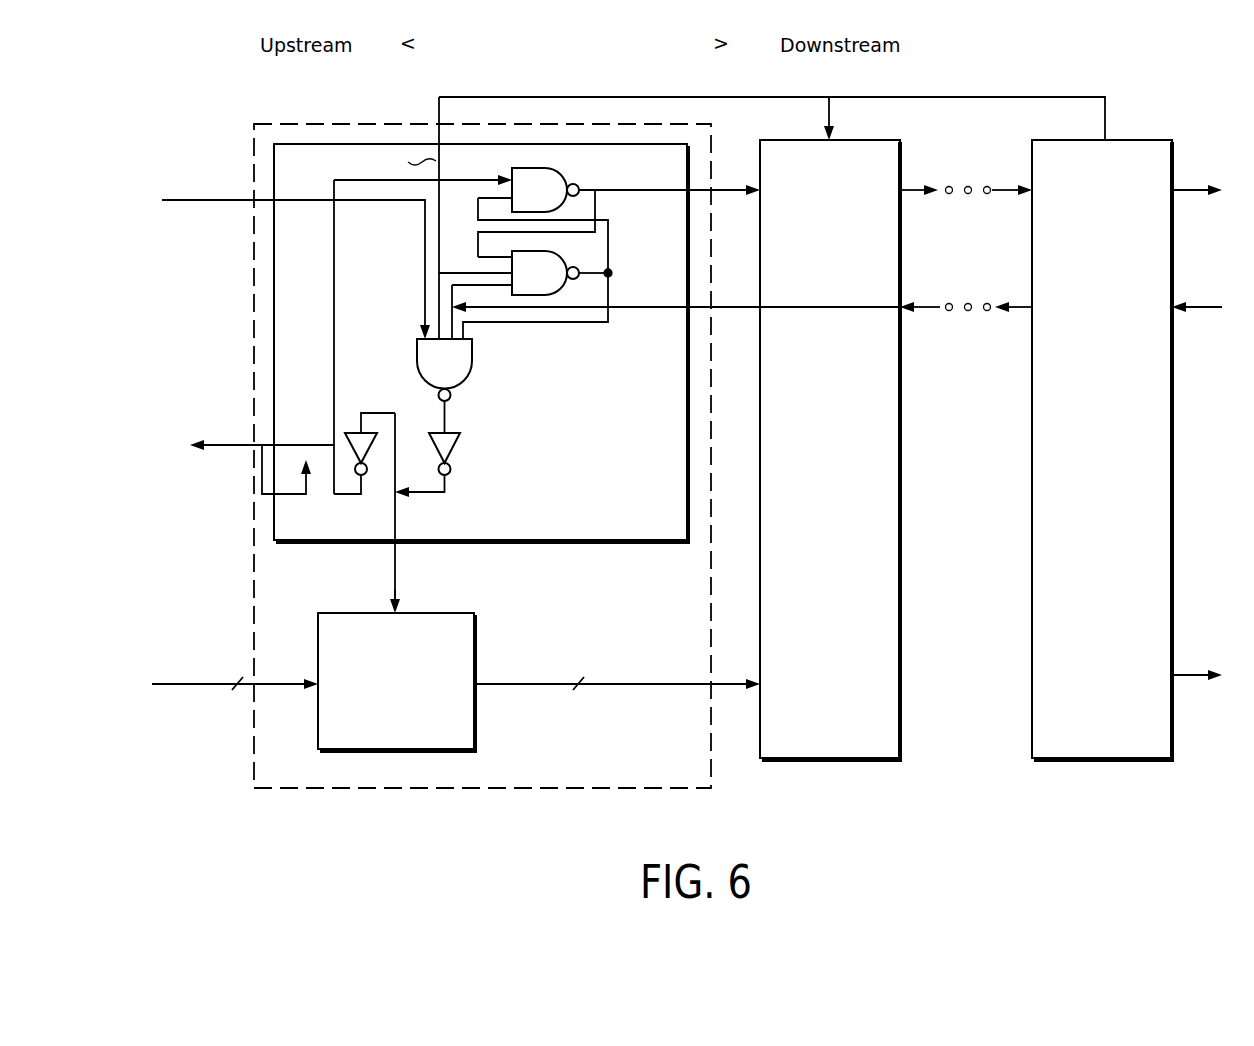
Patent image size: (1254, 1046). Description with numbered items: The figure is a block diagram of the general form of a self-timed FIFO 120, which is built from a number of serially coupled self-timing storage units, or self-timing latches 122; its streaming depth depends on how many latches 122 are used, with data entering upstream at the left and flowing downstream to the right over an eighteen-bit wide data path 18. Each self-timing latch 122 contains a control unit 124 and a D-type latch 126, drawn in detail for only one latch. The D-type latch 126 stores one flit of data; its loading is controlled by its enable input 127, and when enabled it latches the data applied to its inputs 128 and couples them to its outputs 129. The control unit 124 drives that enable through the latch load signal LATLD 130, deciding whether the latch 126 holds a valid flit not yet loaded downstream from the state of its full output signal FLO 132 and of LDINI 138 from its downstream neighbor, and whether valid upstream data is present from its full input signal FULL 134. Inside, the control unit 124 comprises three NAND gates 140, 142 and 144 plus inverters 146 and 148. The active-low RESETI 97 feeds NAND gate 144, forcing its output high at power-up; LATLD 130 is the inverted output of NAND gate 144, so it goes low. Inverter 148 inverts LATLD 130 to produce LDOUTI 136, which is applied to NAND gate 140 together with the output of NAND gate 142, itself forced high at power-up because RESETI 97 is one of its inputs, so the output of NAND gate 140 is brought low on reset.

The data bus width 18 is at (400, 672).
The RESETI 97 is at (772, 202).
The FIFO 120 is at (983, 817).
The self-timing latch 122 is at (252, 731).
The control unit 124 is at (598, 539).
The D-type latch 126 is at (476, 727).
The enable input 127 is at (378, 612).
The inputs 128 is at (282, 682).
The outputs 129 is at (507, 681).
The latch load signal LATLD 130 is at (397, 572).
The full output signal FLO 132 is at (735, 195).
The full input signal FULL 134 is at (216, 204).
The LDOUTI 136 is at (219, 444).
The LDINI 138 is at (735, 313).
The NAND gate 140 is at (456, 190).
The NAND gate 142 is at (525, 273).
The NAND gate 144 is at (444, 359).
The inverter 146 is at (460, 445).
The inverter 148 is at (351, 431).